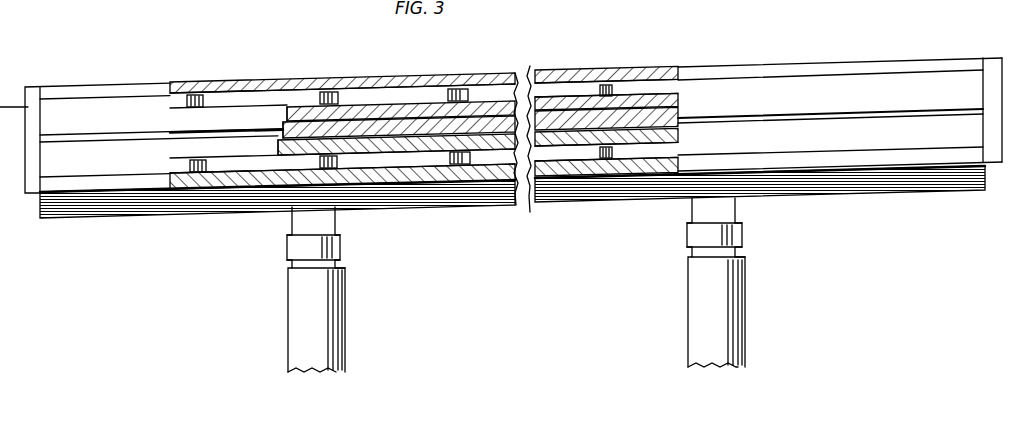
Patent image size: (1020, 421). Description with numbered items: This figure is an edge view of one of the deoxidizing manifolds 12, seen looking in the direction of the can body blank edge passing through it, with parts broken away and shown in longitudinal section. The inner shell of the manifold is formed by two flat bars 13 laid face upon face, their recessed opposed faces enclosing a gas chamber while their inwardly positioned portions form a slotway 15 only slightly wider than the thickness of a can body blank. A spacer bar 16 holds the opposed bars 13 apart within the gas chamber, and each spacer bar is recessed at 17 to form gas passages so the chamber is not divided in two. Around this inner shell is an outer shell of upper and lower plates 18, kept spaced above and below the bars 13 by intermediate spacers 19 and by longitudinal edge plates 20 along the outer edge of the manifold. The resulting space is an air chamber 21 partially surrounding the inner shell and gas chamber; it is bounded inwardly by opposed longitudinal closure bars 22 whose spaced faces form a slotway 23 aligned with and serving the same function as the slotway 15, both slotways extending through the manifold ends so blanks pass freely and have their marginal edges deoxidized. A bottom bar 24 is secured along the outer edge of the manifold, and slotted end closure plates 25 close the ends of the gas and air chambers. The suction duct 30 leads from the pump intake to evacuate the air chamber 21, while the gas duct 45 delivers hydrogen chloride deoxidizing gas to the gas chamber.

The deoxidizing manifold 12 is at (806, 42).
The flat bars 13 is at (342, 130).
The slotway 15 is at (225, 126).
The spacer bar 16 is at (458, 120).
The recess 17 is at (335, 134).
The upper and lower plates 18 is at (445, 180).
The intermediate spacers 19 is at (305, 100).
The longitudinal edge plates 20 is at (400, 162).
The air chamber 21 is at (368, 97).
The closure bars 22 is at (60, 110).
The slotway 23 is at (130, 133).
The bottom bar 24 is at (103, 208).
The slotted end closure plate 25 is at (993, 62).
The suction duct 30 is at (735, 318).
The gas duct 45 is at (292, 322).